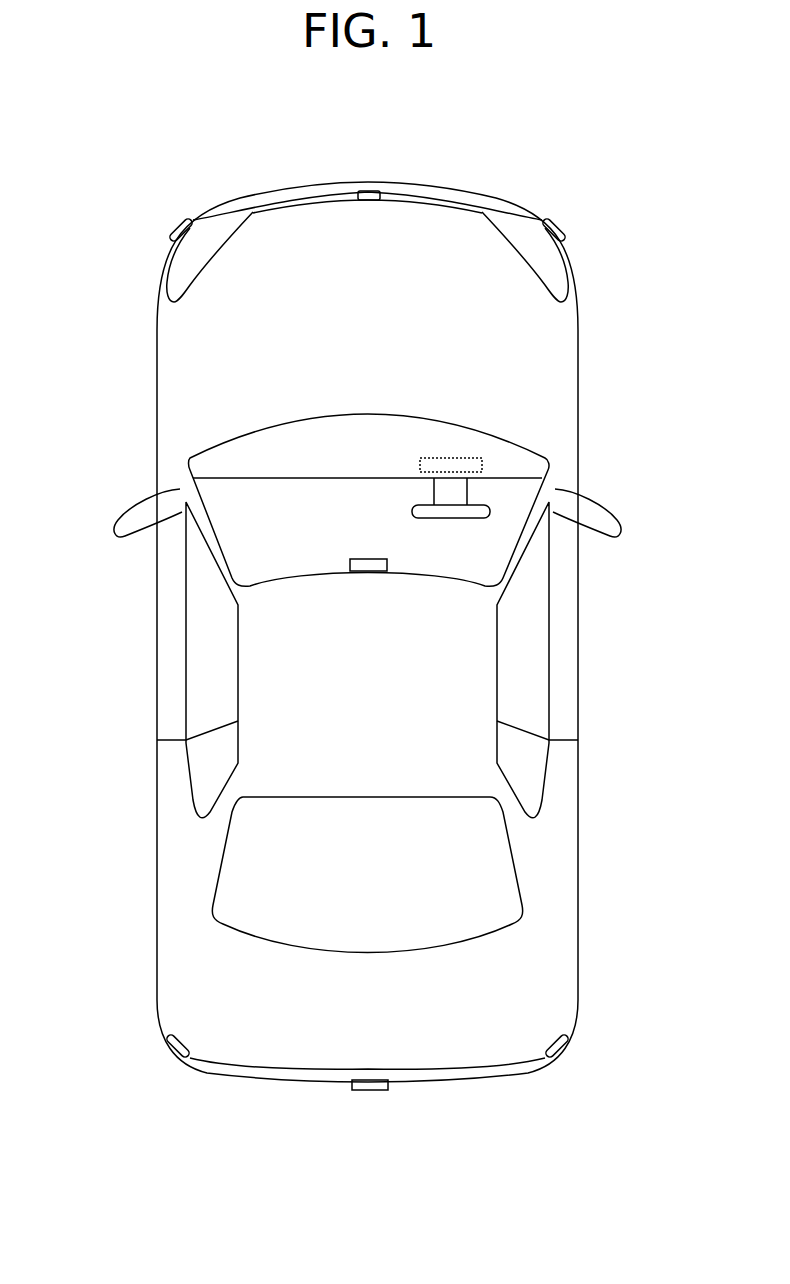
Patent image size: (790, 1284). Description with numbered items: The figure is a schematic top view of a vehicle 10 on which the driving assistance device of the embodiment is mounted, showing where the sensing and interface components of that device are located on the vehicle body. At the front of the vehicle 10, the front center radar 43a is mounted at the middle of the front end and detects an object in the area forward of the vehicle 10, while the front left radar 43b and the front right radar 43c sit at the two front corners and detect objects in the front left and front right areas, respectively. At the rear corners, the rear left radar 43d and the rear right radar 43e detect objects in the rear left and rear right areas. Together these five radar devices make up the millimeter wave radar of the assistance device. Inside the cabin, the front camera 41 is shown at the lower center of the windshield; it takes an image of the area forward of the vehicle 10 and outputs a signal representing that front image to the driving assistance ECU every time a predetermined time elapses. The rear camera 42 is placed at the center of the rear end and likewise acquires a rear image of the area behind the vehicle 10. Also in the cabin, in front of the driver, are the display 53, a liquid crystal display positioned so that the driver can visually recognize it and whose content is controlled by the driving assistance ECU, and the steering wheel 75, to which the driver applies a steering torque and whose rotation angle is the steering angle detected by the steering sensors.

The vehicle 10 is at (157, 660).
The front camera 41 is at (387, 565).
The rear camera 42 is at (368, 1090).
The front center radar 43a is at (369, 191).
The front left radar 43b is at (188, 219).
The front right radar 43c is at (547, 219).
The rear left radar 43d is at (180, 1057).
The rear right radar 43e is at (555, 1057).
The display 53 is at (452, 458).
The steering wheel 75 is at (490, 512).